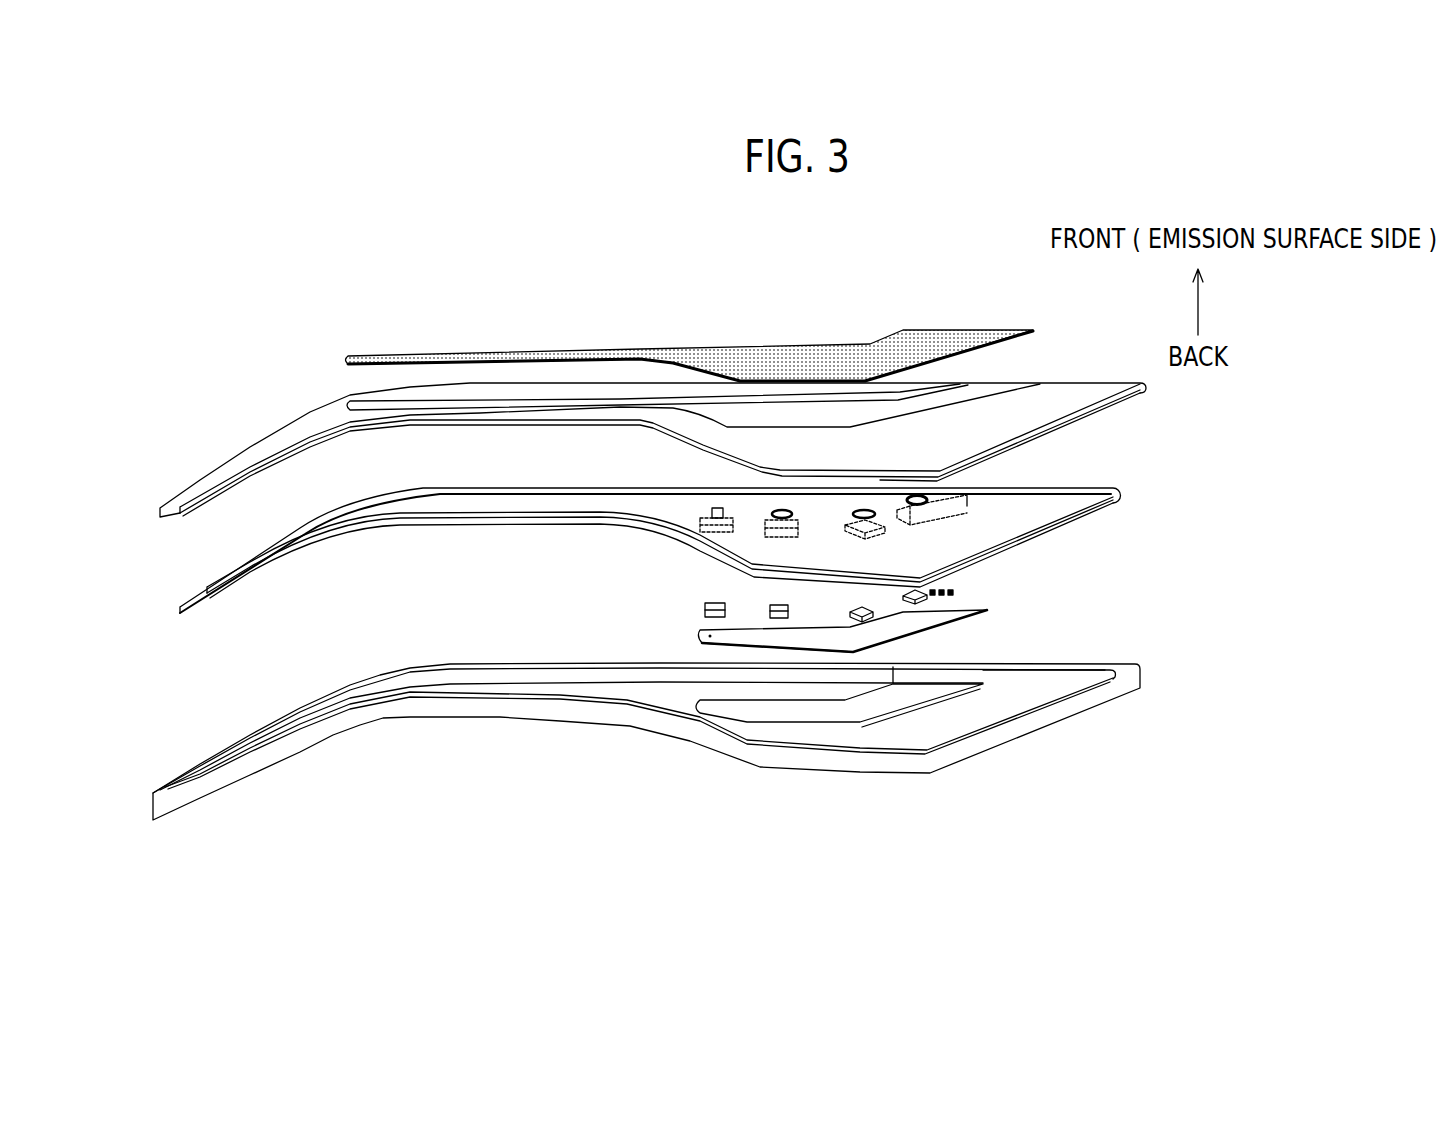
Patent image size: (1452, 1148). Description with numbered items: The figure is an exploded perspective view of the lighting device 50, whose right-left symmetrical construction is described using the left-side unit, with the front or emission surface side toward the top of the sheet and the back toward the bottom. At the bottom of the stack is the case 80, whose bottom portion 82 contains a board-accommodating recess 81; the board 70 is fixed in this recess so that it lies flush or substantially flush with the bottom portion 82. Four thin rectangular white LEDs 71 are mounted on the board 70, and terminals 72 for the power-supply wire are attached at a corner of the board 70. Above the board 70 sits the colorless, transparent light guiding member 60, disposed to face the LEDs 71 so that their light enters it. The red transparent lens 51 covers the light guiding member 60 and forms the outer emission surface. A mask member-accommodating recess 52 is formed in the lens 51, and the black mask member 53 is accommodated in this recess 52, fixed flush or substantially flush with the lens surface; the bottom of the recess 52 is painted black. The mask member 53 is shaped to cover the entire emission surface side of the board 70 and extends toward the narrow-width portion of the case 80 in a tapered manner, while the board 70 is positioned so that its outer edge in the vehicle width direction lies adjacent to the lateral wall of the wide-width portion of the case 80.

The lighting device 50 is at (653, 268).
The lens 51 is at (1121, 374).
The mask member-accommodating recess 52 is at (963, 392).
The mask member 53 is at (955, 311).
The light guiding member 60 is at (1107, 488).
The board 70 is at (990, 610).
The LEDs 71 is at (777, 605).
The terminals 72 is at (950, 592).
The case 80 is at (1120, 659).
The board-accommodating recess 81 is at (926, 692).
The bottom portion 82 is at (1015, 692).